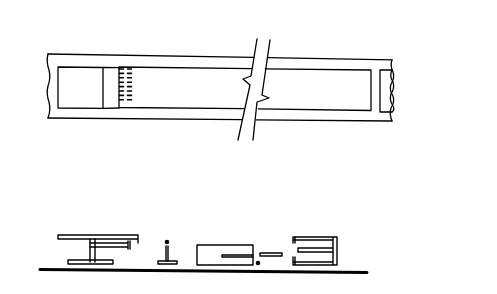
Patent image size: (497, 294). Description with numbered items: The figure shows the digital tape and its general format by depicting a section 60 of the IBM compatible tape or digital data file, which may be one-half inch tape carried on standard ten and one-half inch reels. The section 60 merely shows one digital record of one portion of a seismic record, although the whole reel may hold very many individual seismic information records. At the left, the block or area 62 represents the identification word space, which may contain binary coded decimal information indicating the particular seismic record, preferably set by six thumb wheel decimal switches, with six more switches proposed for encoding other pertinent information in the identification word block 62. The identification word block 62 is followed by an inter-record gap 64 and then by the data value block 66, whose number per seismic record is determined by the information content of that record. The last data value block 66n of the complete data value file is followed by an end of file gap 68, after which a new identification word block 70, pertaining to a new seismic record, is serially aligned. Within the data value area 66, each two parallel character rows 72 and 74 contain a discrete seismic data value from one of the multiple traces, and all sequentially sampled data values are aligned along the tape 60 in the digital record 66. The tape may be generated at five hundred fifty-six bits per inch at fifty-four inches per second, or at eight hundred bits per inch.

The section of tape 60 is at (177, 48).
The identification word block 62 is at (70, 72).
The inter-record gap 64 is at (112, 73).
The data value block 66 is at (185, 77).
The last data value block 66n is at (281, 77).
The end of file gap 68 is at (373, 77).
The new identification word block 70 is at (395, 99).
The character row 72 is at (121, 103).
The character row 74 is at (130, 102).